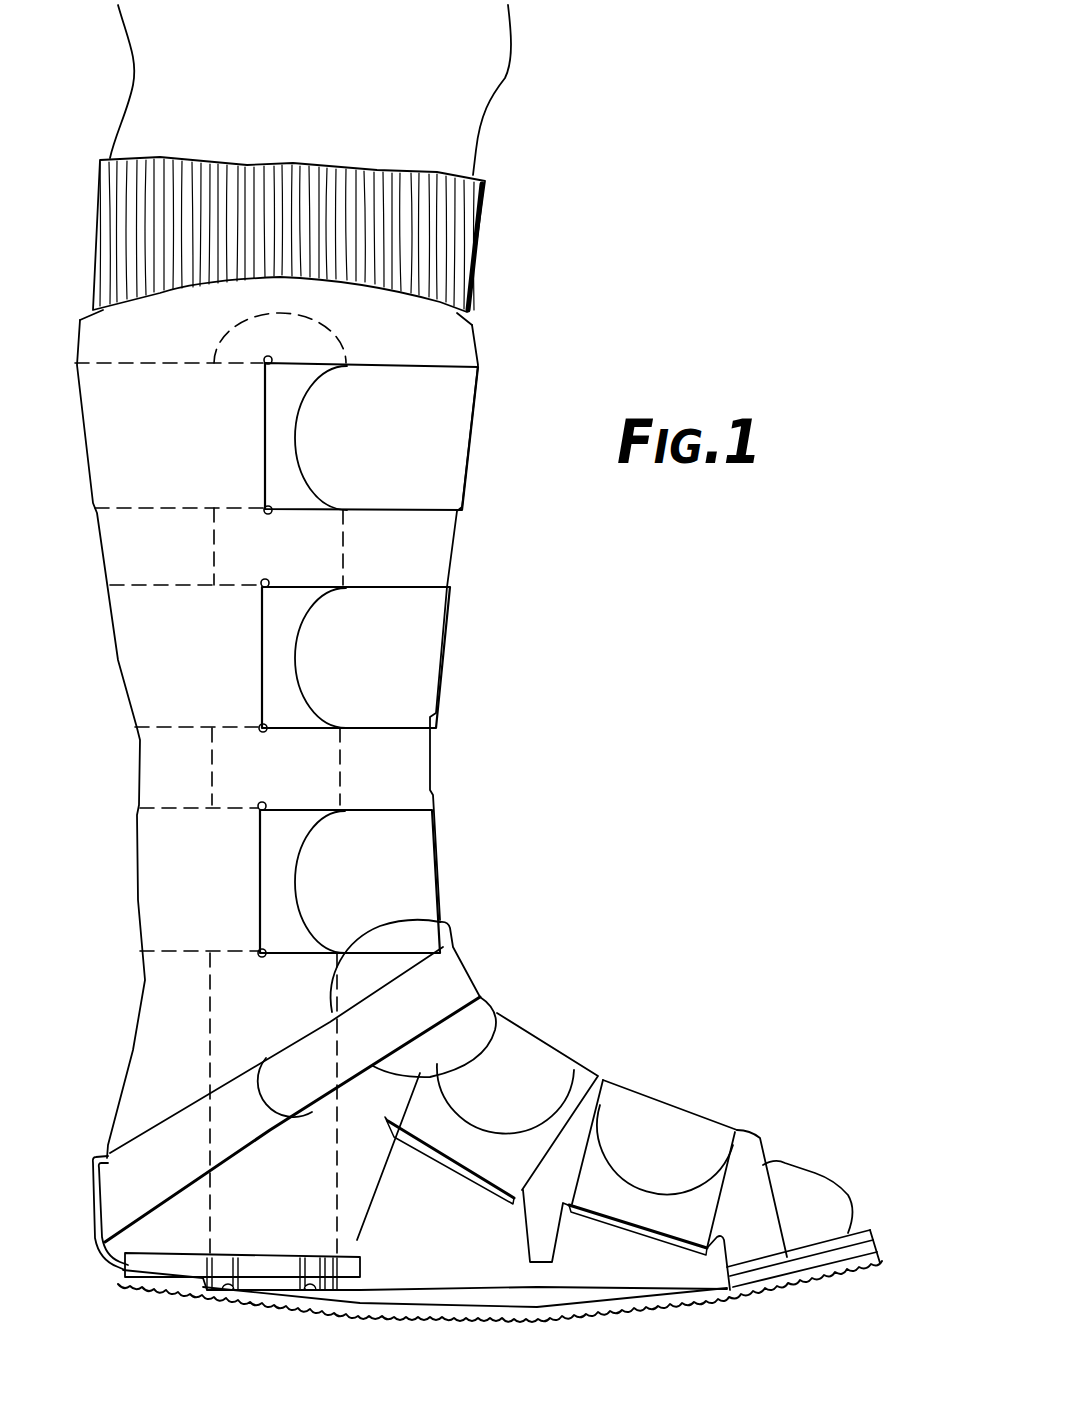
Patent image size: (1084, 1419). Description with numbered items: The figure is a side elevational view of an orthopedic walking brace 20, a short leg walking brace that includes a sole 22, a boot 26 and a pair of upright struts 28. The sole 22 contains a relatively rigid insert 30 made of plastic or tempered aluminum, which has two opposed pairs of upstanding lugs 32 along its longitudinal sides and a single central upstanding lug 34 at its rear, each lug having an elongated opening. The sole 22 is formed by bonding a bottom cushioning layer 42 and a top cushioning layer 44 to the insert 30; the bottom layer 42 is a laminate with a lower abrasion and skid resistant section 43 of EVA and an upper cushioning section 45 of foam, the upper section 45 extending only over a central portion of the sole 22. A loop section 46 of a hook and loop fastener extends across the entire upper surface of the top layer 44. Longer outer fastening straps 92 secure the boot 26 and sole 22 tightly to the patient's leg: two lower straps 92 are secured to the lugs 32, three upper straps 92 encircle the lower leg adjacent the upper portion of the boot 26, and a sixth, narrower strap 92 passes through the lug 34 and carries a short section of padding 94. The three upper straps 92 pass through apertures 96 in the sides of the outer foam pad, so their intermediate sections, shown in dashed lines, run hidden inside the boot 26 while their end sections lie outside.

The orthopedic brace 20 is at (540, 820).
The sole 22 is at (851, 1285).
The boot 26 is at (444, 762).
The upright struts 28 is at (270, 1280).
The insert 30 is at (785, 1280).
The upstanding lugs 32 is at (552, 1213).
The central upstanding lug 34 is at (94, 1243).
The bottom cushioning layer 42 is at (879, 1263).
The lower abrasion and skid resistant section 43 is at (407, 1322).
The top cushioning layer 44 is at (877, 1238).
The upper cushioning section 45 is at (475, 1302).
The loop section 46 is at (867, 1222).
The outer fastening straps 92 is at (460, 454).
The padding 94 is at (440, 937).
The apertures 96 is at (268, 514).